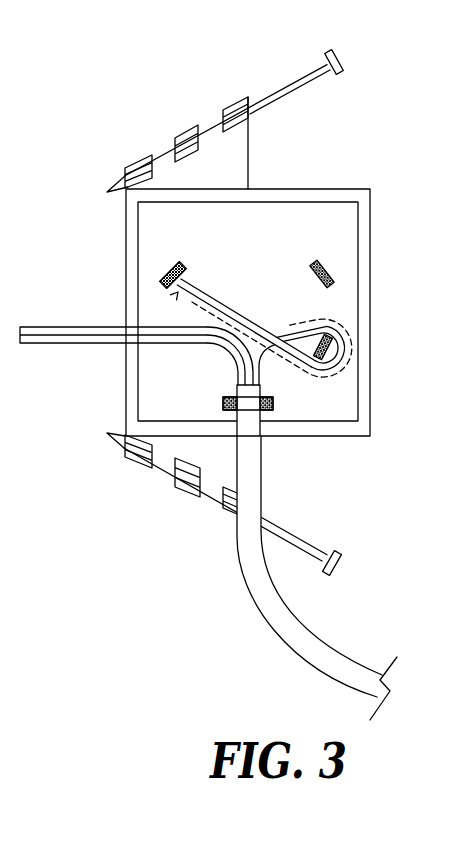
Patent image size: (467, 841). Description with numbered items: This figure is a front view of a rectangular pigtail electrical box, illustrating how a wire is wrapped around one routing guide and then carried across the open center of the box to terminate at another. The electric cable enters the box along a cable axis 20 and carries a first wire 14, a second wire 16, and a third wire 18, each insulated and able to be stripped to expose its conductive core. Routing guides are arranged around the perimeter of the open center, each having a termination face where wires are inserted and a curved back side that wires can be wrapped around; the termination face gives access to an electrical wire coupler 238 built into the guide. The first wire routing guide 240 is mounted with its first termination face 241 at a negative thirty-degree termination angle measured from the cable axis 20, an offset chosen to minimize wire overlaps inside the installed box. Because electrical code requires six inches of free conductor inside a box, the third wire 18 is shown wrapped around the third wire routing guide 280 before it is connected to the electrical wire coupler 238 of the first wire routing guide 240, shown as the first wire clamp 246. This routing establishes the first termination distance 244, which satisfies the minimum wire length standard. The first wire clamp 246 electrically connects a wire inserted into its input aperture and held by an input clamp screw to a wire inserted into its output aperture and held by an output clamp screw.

The first wire 14 is at (53, 343).
The second wire 16 is at (48, 327).
The third wire 18 is at (269, 332).
The cable axis 20 is at (271, 417).
The electrical wire coupler 238 is at (235, 186).
The first wire routing guide 240 is at (116, 241).
The first termination face 241 is at (190, 275).
The first termination distance 244 is at (342, 372).
The first wire clamp 246 is at (167, 273).
The third wire routing guide 280 is at (332, 347).